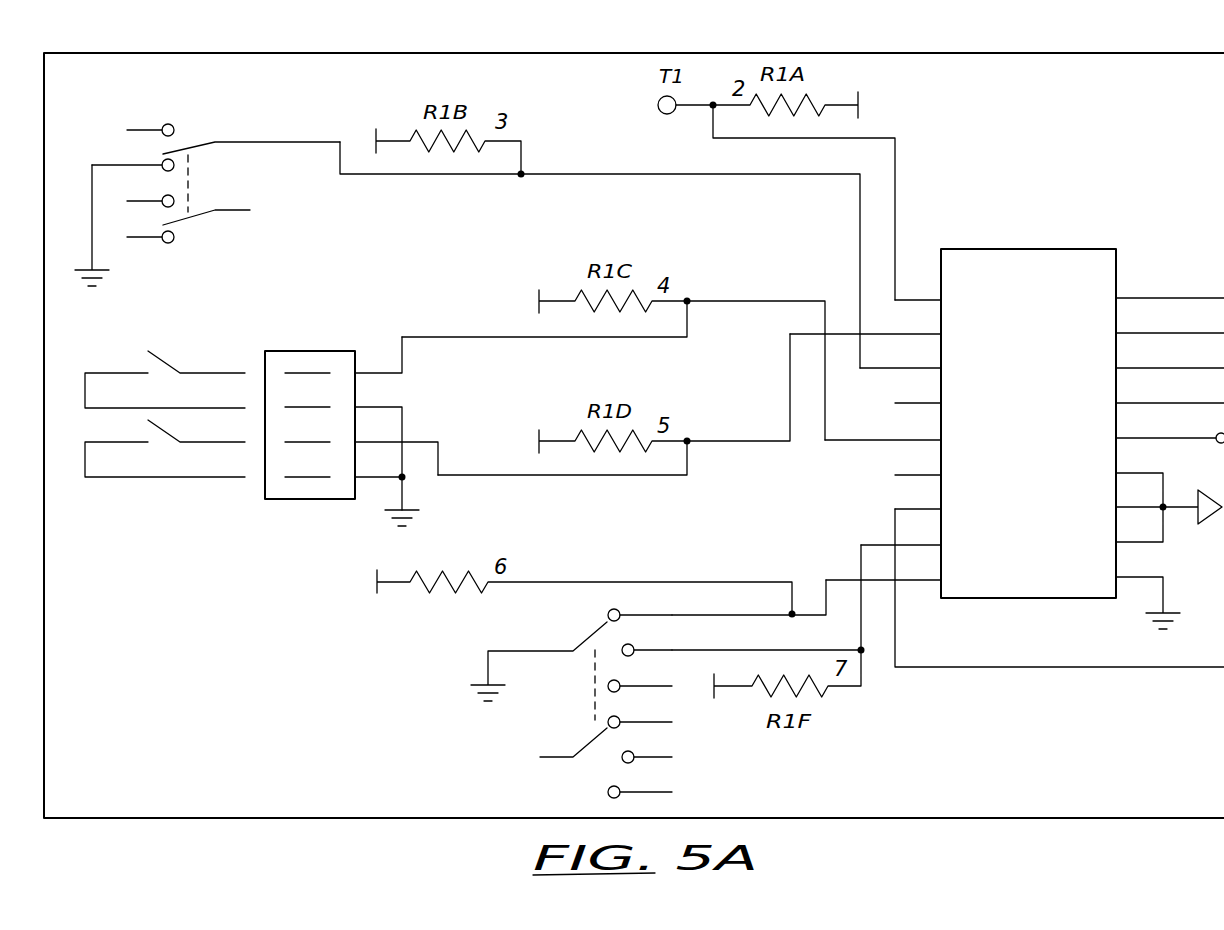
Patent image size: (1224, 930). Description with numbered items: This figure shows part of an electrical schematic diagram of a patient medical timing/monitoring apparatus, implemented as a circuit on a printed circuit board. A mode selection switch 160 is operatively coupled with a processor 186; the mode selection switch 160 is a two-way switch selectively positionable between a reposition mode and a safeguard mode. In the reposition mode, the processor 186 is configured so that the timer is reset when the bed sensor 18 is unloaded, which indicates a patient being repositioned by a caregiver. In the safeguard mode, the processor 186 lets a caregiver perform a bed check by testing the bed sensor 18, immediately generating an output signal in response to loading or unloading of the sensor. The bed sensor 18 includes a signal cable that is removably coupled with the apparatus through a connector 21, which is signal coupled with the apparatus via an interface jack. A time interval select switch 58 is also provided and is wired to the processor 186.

The mode selection switch 160 is at (110, 113).
The bed sensor 18 is at (206, 350).
The connector 21 is at (335, 350).
The time interval select switch 58 is at (505, 748).
The processor 186 is at (1065, 248).